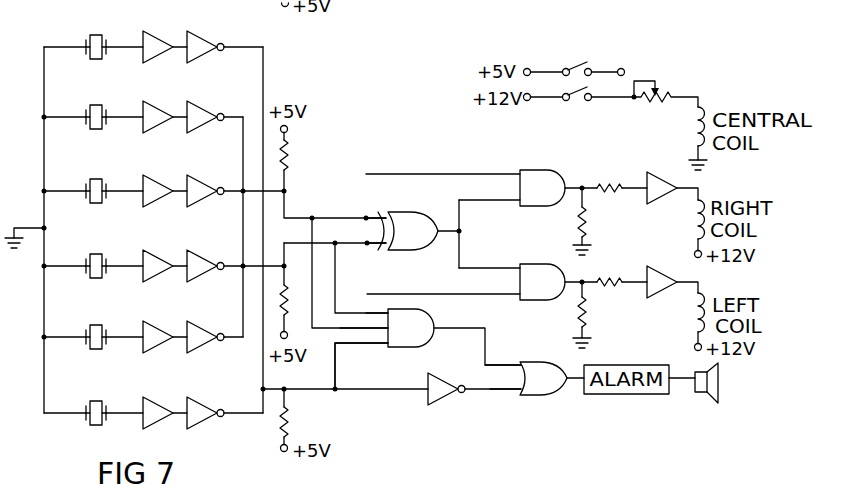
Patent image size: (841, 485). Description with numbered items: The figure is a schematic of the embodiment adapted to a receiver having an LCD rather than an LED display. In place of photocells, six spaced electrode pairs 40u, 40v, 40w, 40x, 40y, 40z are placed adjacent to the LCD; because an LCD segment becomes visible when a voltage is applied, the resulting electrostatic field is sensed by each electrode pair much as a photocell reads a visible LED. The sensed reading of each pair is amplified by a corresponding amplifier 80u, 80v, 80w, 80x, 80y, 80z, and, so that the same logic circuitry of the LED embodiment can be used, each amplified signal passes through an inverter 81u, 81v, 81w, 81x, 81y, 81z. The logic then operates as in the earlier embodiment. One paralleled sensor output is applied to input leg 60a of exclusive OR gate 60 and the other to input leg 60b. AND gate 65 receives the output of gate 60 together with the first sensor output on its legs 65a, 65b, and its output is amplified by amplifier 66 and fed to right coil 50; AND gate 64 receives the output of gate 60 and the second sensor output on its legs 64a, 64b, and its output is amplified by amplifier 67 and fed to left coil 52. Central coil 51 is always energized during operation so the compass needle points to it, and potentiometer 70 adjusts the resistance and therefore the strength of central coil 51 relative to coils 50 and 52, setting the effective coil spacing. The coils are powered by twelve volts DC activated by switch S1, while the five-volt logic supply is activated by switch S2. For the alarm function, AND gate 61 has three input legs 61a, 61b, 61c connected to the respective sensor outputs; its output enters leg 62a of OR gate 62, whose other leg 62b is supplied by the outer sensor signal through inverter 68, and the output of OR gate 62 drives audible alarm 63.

The electrode pair 40u is at (104, 18).
The electrode pair 40v is at (104, 86).
The electrode pair 40w is at (100, 179).
The electrode pair 40x is at (100, 254).
The electrode pair 40y is at (104, 303).
The electrode pair 40z is at (104, 381).
The amplifier 80u is at (163, 25).
The amplifier 80v is at (163, 93).
The amplifier 80w is at (163, 163).
The amplifier 80x is at (163, 238).
The amplifier 80y is at (163, 310).
The amplifier 80z is at (163, 388).
The inverter 81u is at (211, 25).
The inverter 81v is at (203, 104).
The inverter 81w is at (203, 178).
The inverter 81x is at (203, 253).
The inverter 81y is at (203, 324).
The inverter 81z is at (203, 400).
The exclusive OR gate 60 is at (401, 241).
The input leg of exclusive OR gate 60a is at (380, 214).
The input leg of exclusive OR gate 60b is at (379, 248).
The AND gate 61 is at (421, 338).
The input leg of AND gate 61a is at (372, 312).
The input leg of AND gate 61b is at (328, 340).
The input leg of AND gate 61c is at (343, 352).
The OR gate 62 is at (554, 388).
The input leg of OR gate 62a is at (498, 364).
The input leg of OR gate 62b is at (507, 392).
The audible alarm 63 is at (700, 396).
The AND gate 64 is at (553, 292).
The input leg of AND gate 64a is at (506, 272).
The input leg of AND gate 64b is at (511, 306).
The AND gate 65 is at (553, 198).
The input leg of AND gate 65a is at (503, 176).
The input leg of AND gate 65b is at (510, 211).
The amplifier 66 is at (664, 156).
The amplifier 67 is at (660, 252).
The inverter 68 is at (444, 378).
The potentiometer 70 is at (655, 81).
The right coil 50 is at (694, 228).
The central coil 51 is at (695, 127).
The left coil 52 is at (694, 322).
The switch S1 is at (579, 104).
The switch S2 is at (574, 62).